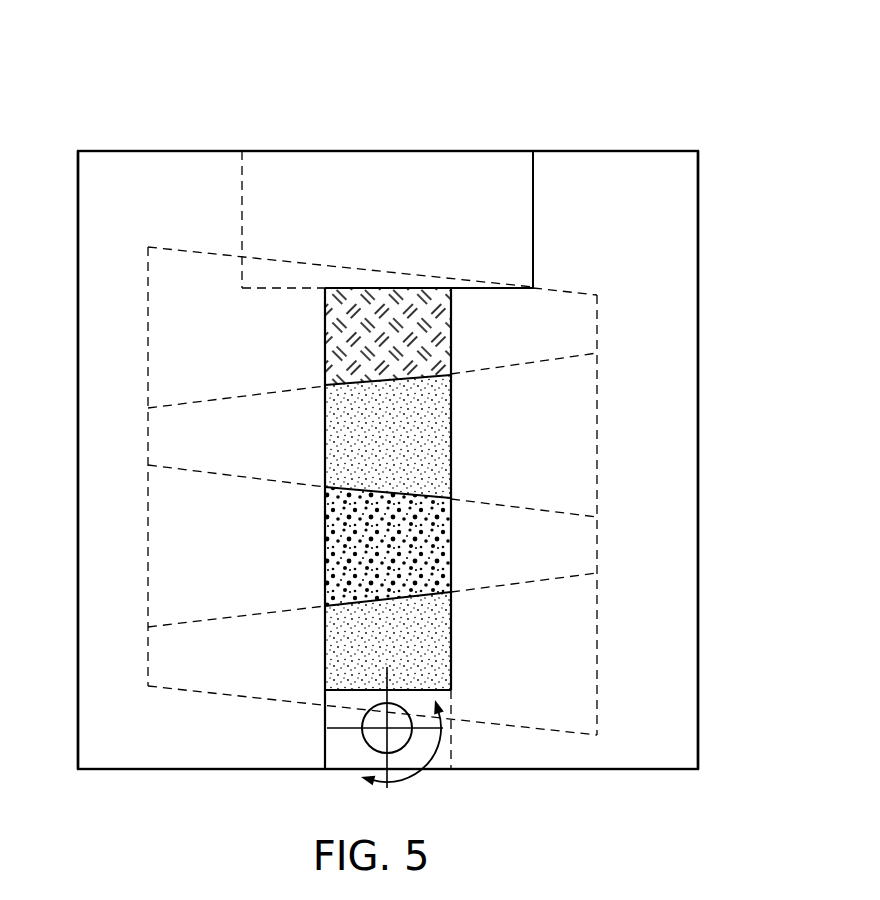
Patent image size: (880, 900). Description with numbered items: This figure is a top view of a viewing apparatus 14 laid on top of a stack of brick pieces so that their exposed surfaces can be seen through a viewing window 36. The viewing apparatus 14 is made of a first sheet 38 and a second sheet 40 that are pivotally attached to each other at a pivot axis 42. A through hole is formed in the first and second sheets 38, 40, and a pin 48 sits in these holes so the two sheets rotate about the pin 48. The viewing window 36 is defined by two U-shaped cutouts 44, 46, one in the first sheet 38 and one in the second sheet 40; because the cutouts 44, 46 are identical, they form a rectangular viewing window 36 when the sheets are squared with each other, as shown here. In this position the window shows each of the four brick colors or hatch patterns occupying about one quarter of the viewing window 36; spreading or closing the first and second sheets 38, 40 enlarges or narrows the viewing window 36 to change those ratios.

The viewing apparatus 14 is at (727, 95).
The viewing window 36 is at (450, 408).
The first sheet 38 is at (99, 256).
The second sheet 40 is at (675, 252).
The pivot axis 42 is at (385, 730).
The U-shaped cutout 44 is at (296, 341).
The U-shaped cutout 46 is at (466, 333).
The pin 48 is at (373, 752).